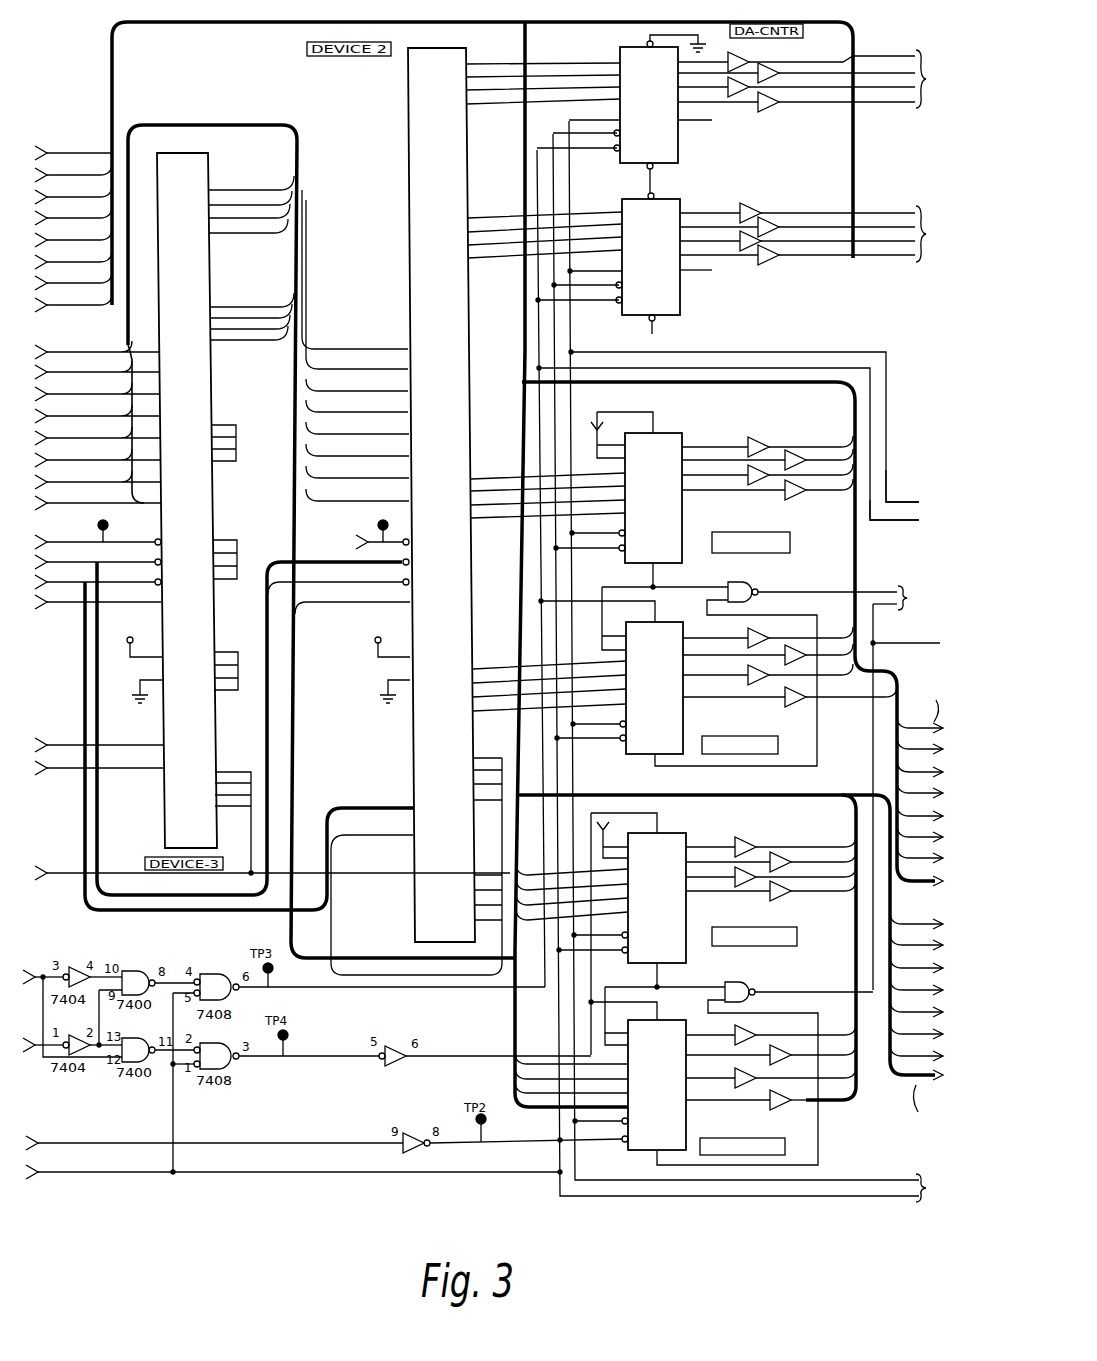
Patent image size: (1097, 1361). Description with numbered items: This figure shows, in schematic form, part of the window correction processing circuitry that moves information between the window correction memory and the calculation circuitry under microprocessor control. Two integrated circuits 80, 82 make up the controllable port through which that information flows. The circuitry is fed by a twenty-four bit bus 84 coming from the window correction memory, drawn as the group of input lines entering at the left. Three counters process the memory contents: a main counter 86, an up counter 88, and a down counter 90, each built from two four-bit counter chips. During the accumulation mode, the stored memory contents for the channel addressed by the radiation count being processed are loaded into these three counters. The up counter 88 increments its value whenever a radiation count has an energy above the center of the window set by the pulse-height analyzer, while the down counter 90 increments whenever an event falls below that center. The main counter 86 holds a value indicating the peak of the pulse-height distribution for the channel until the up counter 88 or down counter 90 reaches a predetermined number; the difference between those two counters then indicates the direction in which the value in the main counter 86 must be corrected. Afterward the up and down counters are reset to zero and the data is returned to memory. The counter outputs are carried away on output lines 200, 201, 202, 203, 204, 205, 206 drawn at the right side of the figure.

The integrated circuit 80 is at (183, 153).
The integrated circuit 82 is at (408, 153).
The twenty-four bit bus 84 is at (66, 138).
The main counter 86 is at (731, 164).
The up counter 88 is at (821, 576).
The down counter 90 is at (829, 970).
The output lines 200 is at (936, 1188).
The output line 201 is at (910, 648).
The output lines 202 is at (904, 598).
The output line 203 is at (887, 524).
The output line 204 is at (893, 470).
The output lines 205 is at (937, 234).
The output lines 206 is at (936, 79).